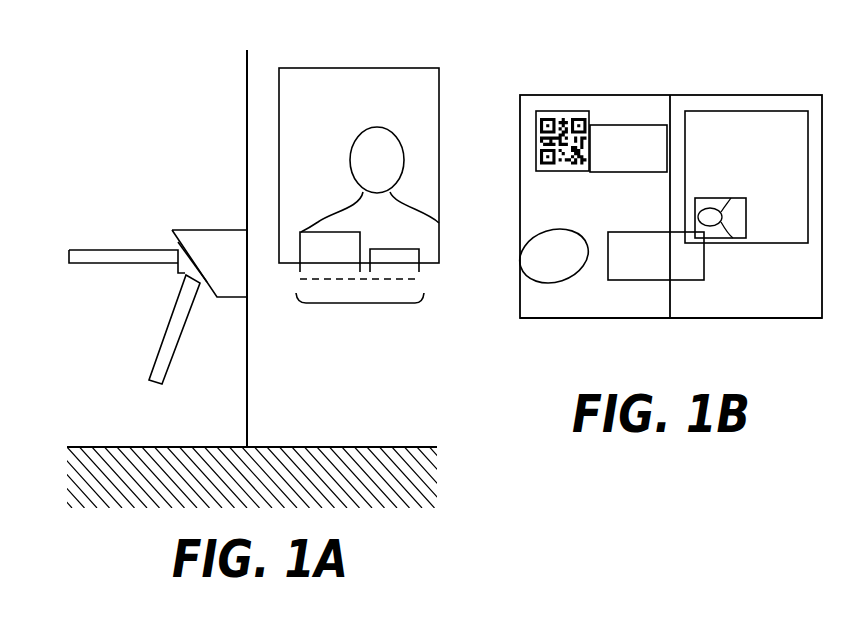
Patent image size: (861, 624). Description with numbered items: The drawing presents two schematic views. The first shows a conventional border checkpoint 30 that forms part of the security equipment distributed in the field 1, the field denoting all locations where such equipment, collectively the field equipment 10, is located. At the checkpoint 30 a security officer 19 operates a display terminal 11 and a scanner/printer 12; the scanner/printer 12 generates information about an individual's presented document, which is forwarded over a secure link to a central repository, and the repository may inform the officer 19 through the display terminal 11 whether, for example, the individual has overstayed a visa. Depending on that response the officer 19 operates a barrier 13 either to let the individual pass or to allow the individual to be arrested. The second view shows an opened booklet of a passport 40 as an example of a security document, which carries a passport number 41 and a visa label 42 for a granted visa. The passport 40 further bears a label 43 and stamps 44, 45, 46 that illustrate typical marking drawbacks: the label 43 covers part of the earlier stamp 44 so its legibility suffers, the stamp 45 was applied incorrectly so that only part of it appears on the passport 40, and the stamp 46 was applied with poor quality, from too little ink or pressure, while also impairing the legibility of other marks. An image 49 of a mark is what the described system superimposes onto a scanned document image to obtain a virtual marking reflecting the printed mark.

In FIG. 1A, the field 1 is at (205, 190).
In FIG. 1A, the field equipment 10 is at (355, 304).
In FIG. 1A, the display terminal 11 is at (303, 232).
In FIG. 1A, the scanner/printer 12 is at (415, 281).
In FIG. 1A, the barrier 13 is at (138, 250).
In FIG. 1A, the security officer 19 is at (353, 142).
In FIG. 1A, the checkpoint 30 is at (161, 127).
In FIG. 1B, the passport 40 is at (783, 318).
In FIG. 1B, the passport number 41 is at (587, 318).
In FIG. 1B, the visa label 42 is at (708, 111).
In FIG. 1B, the label 43 is at (559, 111).
In FIG. 1B, the stamp 44 is at (642, 125).
In FIG. 1B, the stamp 45 is at (535, 284).
In FIG. 1B, the stamp 46 is at (704, 260).
In FIG. 1B, the image of a mark 49 is at (819, 623).